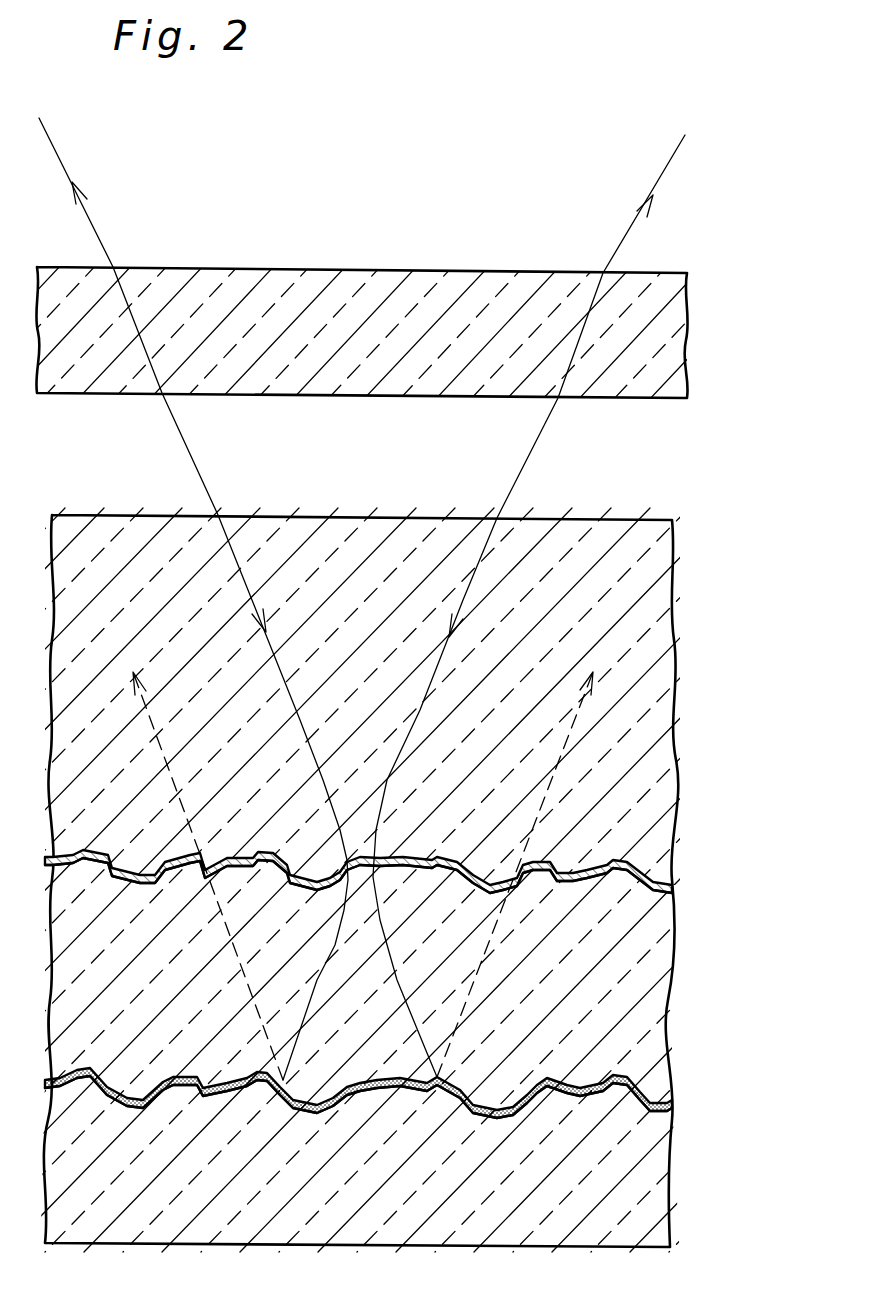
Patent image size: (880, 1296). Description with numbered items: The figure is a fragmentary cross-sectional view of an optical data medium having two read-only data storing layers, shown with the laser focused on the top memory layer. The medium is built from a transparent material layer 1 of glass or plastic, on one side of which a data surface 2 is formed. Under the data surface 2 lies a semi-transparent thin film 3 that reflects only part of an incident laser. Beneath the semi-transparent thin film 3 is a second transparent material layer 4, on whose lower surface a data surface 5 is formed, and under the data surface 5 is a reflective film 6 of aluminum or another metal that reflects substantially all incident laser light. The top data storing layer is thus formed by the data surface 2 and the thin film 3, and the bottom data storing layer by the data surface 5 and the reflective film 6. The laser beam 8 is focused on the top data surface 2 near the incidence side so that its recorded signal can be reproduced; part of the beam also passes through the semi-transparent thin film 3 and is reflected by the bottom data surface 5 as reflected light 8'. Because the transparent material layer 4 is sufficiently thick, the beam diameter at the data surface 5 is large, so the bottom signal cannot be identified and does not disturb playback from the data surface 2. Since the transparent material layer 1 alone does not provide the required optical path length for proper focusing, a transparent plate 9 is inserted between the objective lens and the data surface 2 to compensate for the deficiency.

The transparent material layer 1 is at (648, 695).
The data surface 2 is at (633, 858).
The semi-transparent thin film 3 is at (587, 887).
The transparent material layer 4 is at (633, 978).
The data surface 5 is at (637, 1075).
The reflective film 6 is at (590, 1100).
The laser beam 8 is at (362, 599).
The reflected light 8' is at (386, 876).
The transparent plate 9 is at (666, 284).